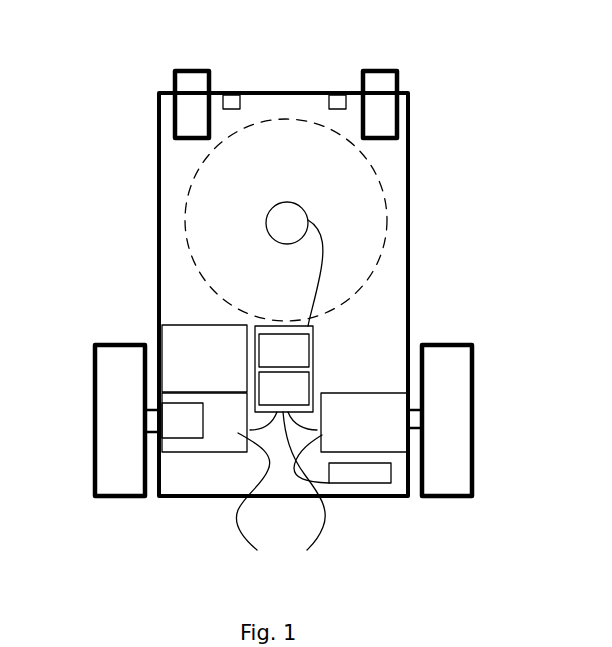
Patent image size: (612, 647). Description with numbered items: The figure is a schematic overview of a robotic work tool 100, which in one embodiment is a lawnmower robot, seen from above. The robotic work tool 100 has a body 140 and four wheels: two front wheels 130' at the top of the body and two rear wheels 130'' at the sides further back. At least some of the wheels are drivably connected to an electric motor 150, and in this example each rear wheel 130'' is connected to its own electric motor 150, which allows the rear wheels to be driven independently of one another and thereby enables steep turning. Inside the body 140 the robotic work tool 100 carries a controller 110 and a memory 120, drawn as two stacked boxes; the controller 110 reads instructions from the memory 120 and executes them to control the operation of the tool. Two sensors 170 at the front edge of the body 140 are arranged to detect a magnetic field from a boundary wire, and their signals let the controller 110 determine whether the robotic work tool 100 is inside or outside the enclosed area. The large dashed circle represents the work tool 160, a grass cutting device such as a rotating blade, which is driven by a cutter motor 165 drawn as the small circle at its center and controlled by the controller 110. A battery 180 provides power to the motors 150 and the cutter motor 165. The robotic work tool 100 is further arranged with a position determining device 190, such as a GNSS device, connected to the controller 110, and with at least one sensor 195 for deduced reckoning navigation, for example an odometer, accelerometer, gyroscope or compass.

The robotic work tool 100 is at (153, 133).
The controller 110 is at (313, 348).
The memory 120 is at (312, 388).
The front wheels 130' is at (346, 131).
The rear wheels 130'' is at (245, 467).
The body 140 is at (182, 496).
The electric motor 150 is at (282, 495).
The work tool 160 is at (200, 258).
The cutter motor 165 is at (267, 230).
The sensor 170 is at (322, 92).
The battery 180 is at (177, 348).
The position determining device 190 is at (337, 485).
The deduced reckoning navigation sensor 195 is at (182, 438).